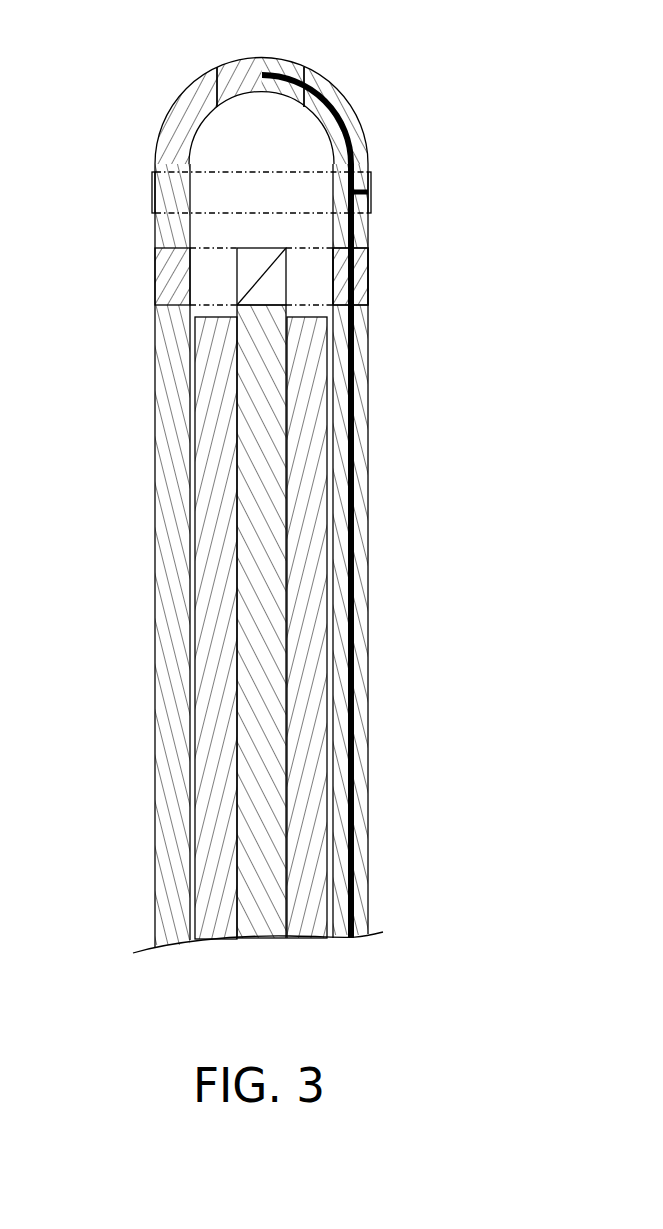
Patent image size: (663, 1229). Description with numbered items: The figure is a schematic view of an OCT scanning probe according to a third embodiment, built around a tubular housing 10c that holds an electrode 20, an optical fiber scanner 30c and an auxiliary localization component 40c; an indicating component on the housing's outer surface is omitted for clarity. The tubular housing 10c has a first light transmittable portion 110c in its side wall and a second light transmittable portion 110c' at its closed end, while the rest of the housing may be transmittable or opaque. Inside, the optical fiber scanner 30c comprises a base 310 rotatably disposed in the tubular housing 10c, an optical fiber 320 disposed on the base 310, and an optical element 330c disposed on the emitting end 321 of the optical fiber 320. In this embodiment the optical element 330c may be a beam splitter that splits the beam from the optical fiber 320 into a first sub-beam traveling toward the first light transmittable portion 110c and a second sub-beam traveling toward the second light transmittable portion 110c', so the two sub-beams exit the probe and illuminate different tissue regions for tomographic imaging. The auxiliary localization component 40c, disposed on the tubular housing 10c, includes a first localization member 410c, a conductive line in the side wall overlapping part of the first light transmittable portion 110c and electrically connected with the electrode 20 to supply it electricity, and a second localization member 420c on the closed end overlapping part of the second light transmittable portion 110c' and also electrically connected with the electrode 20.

The tubular housing 10c is at (172, 93).
The second light transmittable portion 110c' is at (260, 64).
The first light transmittable portion 110c is at (391, 276).
The electrode 20 is at (372, 187).
The auxiliary localization component 40c is at (446, 490).
The second localization member 420c is at (285, 73).
The first localization member 410c is at (461, 551).
The optical fiber scanner 30c is at (190, 592).
The optical element 330c is at (270, 282).
The emitting end 321 is at (255, 300).
The optical fiber 320 is at (248, 385).
The base 310 is at (199, 628).